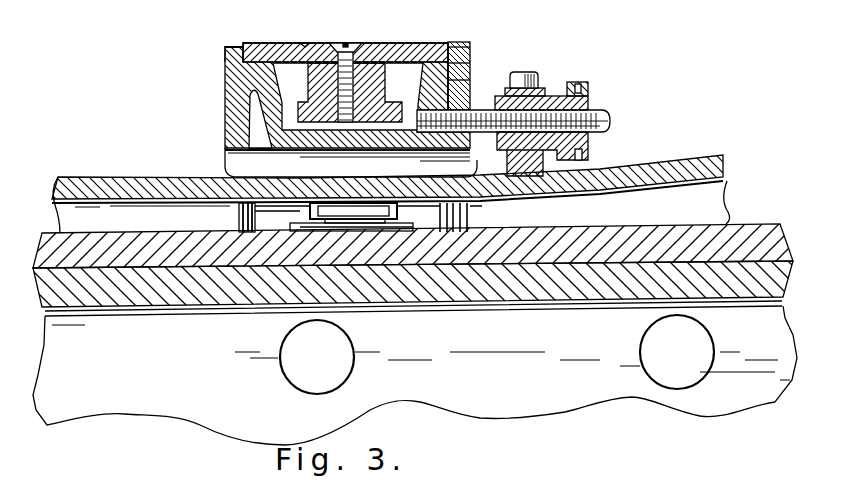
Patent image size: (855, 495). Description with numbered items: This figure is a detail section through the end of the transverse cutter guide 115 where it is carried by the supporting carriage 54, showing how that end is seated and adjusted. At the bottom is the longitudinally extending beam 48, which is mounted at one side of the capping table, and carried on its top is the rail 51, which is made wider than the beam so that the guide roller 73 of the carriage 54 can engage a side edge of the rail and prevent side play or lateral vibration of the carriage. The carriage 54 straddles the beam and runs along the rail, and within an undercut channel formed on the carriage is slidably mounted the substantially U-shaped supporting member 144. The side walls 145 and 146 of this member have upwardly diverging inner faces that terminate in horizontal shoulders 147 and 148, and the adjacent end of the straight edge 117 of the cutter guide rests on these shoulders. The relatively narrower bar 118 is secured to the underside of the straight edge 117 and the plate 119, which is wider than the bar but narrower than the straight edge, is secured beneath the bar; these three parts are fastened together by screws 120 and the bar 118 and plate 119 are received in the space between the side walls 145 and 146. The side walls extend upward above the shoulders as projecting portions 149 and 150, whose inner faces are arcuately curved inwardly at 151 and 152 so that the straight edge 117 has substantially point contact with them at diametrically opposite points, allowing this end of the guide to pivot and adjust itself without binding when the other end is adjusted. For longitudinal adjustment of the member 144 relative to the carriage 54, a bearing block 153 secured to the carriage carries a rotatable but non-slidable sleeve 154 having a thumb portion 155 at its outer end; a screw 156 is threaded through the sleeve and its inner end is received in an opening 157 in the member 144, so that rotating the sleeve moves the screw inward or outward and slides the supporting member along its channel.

The longitudinally extending beam 48 is at (576, 384).
The rail 51 is at (670, 237).
The supporting carriage 54 is at (150, 182).
The guide roller 73 is at (292, 228).
The cutter guide 115 is at (422, 35).
The straight edge 117 is at (297, 44).
The bar 118 is at (325, 50).
The plate 119 is at (303, 101).
The screws 120 is at (352, 72).
The supporting member 144 is at (263, 153).
The side wall 145 is at (270, 97).
The side wall 146 is at (470, 81).
The horizontal shoulder 147 is at (270, 67).
The horizontal shoulder 148 is at (470, 64).
The projecting portion 149 is at (240, 32).
The projecting portion 150 is at (453, 43).
The arcuately curved inner face 151 is at (230, 50).
The arcuately curved inner face 152 is at (470, 48).
The bearing block 153 is at (526, 168).
The sleeve 154 is at (547, 93).
The thumb portion 155 is at (588, 100).
The screw 156 is at (576, 125).
The opening 157 is at (424, 128).